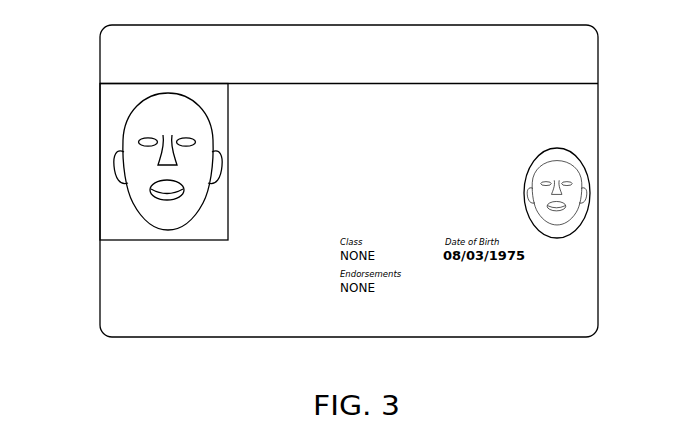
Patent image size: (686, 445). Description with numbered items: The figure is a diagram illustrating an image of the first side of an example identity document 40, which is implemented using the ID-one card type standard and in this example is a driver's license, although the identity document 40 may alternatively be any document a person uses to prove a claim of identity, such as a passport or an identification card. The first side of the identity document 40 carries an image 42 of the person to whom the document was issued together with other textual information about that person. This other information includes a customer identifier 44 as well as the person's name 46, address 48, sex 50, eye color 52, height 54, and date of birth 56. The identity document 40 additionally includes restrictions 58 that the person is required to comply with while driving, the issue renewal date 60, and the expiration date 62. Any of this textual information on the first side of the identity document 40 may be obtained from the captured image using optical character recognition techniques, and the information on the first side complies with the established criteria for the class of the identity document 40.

The identity document 40 is at (100, 42).
The image 42 is at (128, 198).
The customer identifier 44 is at (346, 98).
The name 46 is at (343, 143).
The address 48 is at (293, 186).
The sex 50 is at (265, 244).
The eye color 52 is at (270, 274).
The height 54 is at (240, 304).
The date of birth 56 is at (473, 231).
The restrictions 58 is at (371, 316).
The issue renewal date 60 is at (490, 273).
The expiration date 62 is at (470, 305).